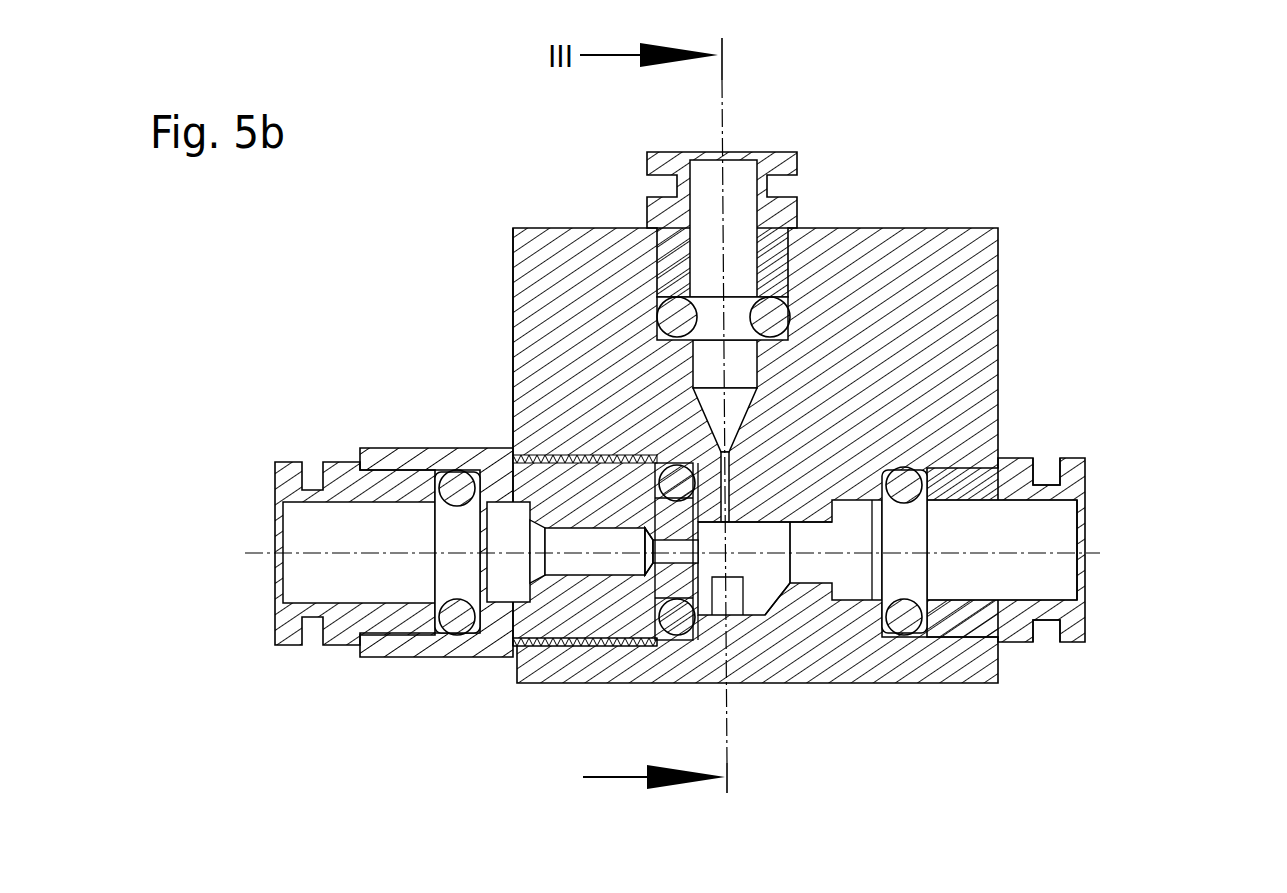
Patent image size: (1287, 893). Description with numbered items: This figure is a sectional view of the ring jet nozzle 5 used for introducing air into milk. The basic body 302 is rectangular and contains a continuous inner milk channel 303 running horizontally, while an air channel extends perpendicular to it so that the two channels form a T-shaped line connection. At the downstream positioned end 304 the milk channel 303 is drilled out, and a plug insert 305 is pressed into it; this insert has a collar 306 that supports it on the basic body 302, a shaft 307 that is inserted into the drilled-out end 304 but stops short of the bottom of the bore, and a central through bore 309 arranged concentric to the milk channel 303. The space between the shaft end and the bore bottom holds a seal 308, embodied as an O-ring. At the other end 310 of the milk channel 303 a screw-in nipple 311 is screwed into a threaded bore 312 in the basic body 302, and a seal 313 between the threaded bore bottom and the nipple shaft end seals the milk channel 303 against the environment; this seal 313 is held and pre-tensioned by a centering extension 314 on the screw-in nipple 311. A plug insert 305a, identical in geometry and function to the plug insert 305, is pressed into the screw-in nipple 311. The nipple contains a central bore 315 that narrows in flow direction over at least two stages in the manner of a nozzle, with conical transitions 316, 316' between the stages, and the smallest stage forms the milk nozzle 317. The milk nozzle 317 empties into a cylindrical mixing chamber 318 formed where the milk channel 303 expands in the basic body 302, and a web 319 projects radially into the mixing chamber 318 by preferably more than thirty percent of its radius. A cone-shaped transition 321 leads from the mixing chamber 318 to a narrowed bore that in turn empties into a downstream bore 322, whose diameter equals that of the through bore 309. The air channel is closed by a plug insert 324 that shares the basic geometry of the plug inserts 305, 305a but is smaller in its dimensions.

The valve assembly 5 is at (1028, 124).
The basic body 302 is at (972, 290).
The milk channel 303 is at (1007, 490).
The downstream positioned end 304 is at (984, 648).
The plug insert 305 is at (1068, 478).
The plug insert 305a is at (278, 462).
The collar 306 is at (1025, 450).
The shaft 307 is at (958, 484).
The seal 308 is at (772, 537).
The central through bore 309 is at (1023, 553).
The other end 310 is at (588, 659).
The threaded bore 312 is at (585, 642).
The screw-in nipple 311 is at (500, 627).
The seal 313 is at (682, 617).
The centering extension 314 is at (752, 525).
The central bore 315 is at (602, 542).
The transition 316 is at (534, 433).
The transition 316' is at (687, 646).
The milk nozzle 317 is at (658, 538).
The mixing chamber 318 is at (742, 452).
The web 319 is at (907, 617).
The transition 321 is at (787, 618).
The bore 322 is at (1036, 640).
The plug insert 324 is at (778, 215).